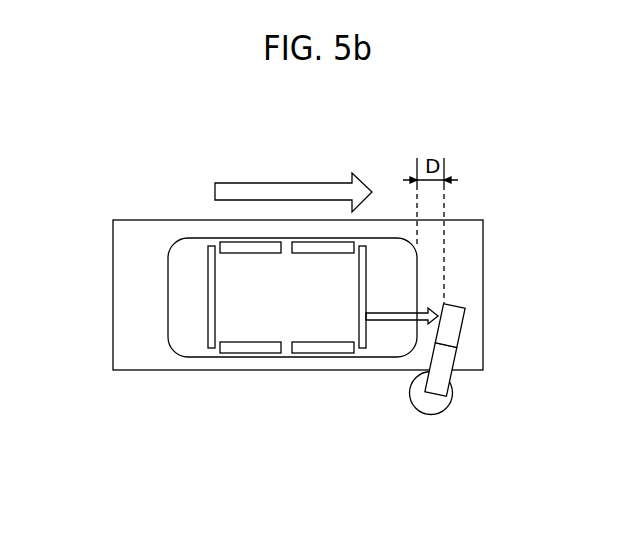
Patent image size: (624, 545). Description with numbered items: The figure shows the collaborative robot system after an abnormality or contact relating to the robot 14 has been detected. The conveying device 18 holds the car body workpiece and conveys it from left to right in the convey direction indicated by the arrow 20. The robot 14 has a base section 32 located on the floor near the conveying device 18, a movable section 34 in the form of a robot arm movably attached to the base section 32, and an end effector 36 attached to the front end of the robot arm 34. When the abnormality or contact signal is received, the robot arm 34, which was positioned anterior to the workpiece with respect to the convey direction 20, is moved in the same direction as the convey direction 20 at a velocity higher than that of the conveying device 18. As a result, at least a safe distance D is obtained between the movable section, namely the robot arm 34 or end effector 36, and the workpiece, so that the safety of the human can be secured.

The collaborative robot 14 is at (414, 422).
The conveying device 18 is at (113, 282).
The convey direction arrow 20 is at (277, 183).
The base section 32 is at (455, 397).
The movable section 34 is at (425, 358).
The end effector 36 is at (462, 322).